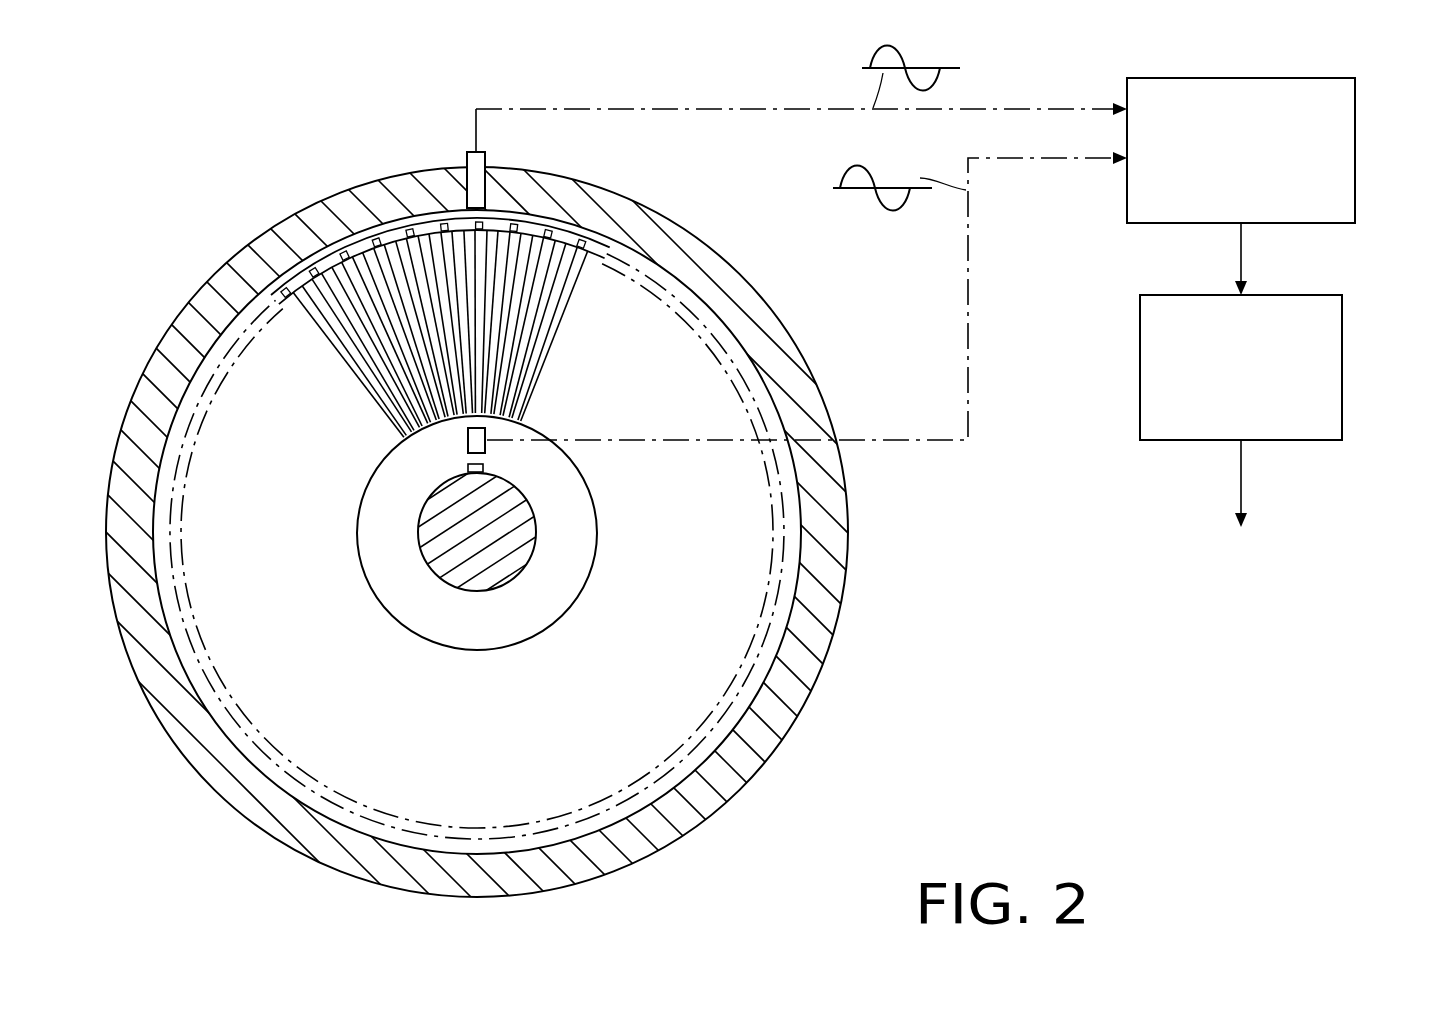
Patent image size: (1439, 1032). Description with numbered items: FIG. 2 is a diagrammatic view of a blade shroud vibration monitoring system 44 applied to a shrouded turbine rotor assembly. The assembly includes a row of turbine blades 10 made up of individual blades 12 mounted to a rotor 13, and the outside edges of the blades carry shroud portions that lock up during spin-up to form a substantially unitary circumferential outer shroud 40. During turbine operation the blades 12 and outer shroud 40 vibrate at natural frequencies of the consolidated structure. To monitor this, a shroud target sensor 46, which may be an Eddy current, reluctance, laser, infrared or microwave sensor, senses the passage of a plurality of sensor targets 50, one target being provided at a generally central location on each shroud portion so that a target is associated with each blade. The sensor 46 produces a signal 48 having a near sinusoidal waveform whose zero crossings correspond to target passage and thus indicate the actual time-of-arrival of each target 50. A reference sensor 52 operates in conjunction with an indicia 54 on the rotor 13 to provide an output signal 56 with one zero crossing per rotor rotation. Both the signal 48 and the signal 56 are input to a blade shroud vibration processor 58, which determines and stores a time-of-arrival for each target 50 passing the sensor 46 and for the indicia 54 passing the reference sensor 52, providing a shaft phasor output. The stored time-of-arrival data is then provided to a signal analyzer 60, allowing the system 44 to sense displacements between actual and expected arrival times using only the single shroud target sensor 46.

The row of turbine blades 10 is at (467, 476).
The blade 12 is at (387, 345).
The rotor 13 is at (467, 651).
The circumferential outer shroud 40 is at (317, 257).
The blade shroud vibration monitoring system 44 is at (1279, 271).
The shroud target sensor 46 is at (463, 178).
The signal 48 is at (870, 52).
The sensor target 50 is at (410, 230).
The reference sensor 52 is at (466, 437).
The indicia 54 is at (487, 468).
The output signal 56 is at (840, 178).
The blade shroud vibration processor 58 is at (1237, 78).
The signal analyzer 60 is at (1297, 441).